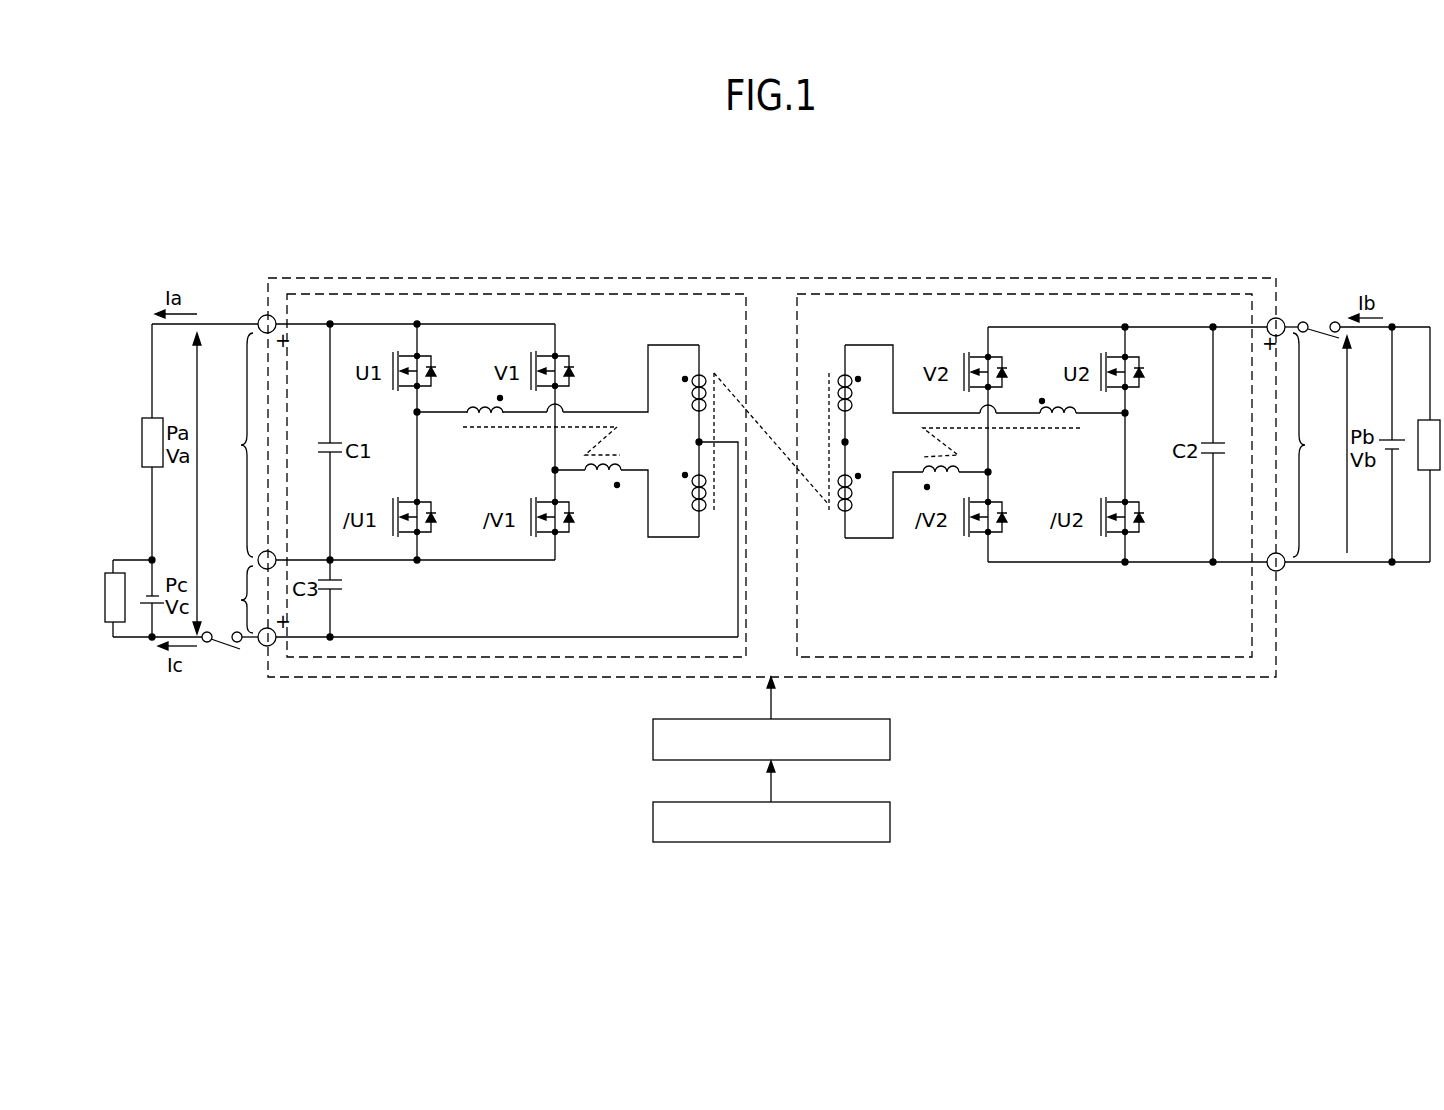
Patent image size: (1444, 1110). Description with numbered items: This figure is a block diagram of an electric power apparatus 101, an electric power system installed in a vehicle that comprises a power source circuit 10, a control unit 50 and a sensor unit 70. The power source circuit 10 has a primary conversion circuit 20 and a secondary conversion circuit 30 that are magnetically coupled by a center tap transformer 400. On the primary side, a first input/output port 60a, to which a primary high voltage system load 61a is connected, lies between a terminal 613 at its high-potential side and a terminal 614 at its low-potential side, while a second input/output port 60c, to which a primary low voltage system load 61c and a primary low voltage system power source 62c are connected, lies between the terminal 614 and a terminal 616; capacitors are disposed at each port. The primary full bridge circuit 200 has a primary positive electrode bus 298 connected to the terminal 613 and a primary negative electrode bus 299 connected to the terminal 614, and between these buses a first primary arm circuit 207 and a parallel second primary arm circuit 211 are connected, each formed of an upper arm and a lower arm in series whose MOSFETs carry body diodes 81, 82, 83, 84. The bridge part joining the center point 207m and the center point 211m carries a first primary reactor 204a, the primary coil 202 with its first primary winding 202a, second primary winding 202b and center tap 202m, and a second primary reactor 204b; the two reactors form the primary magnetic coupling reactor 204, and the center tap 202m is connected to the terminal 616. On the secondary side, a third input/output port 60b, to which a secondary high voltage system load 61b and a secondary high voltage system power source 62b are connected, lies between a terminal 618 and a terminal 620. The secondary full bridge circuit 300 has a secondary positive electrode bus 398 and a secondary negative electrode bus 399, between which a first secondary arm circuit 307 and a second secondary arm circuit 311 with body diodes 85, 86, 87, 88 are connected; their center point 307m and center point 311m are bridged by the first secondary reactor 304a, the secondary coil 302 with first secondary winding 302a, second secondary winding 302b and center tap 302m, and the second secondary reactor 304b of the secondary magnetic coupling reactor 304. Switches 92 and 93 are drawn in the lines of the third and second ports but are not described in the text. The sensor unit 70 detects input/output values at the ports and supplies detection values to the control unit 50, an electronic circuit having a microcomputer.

The electric power apparatus 101 is at (247, 215).
The power source circuit 10 is at (1158, 277).
The primary conversion circuit 20 is at (516, 435).
The secondary conversion circuit 30 is at (1024, 435).
The primary full bridge circuit 200 is at (600, 292).
The secondary full bridge circuit 300 is at (942, 292).
The primary coil 202 is at (678, 438).
The first primary winding 202a is at (690, 395).
The second primary winding 202b is at (690, 507).
The center tap 202m is at (696, 442).
The primary magnetic coupling reactor 204 is at (542, 460).
The first primary reactor 204a is at (470, 409).
The second primary reactor 204b is at (602, 480).
The first primary arm circuit 207 is at (438, 468).
The center point 207m is at (412, 412).
The second primary arm circuit 211 is at (572, 468).
The center point 211m is at (552, 473).
The primary positive electrode bus 298 is at (350, 324).
The primary negative electrode bus 299 is at (358, 564).
The diode of switch U1 81 is at (433, 370).
The diode of switch /U1 82 is at (433, 520).
The diode of switch V1 83 is at (571, 372).
The diode of switch /V1 84 is at (571, 522).
The secondary coil 302 is at (879, 420).
The first secondary winding 302a is at (850, 395).
The second secondary winding 302b is at (848, 510).
The center tap 302m is at (848, 442).
The secondary magnetic coupling reactor 304 is at (993, 464).
The first secondary reactor 304a is at (1050, 410).
The second secondary reactor 304b is at (935, 482).
The first secondary arm circuit 307 is at (1132, 470).
The center point 307m is at (1128, 414).
The second secondary arm circuit 311 is at (993, 462).
The center point 311m is at (991, 474).
The secondary positive electrode bus 398 is at (1155, 327).
The secondary negative electrode bus 399 is at (1185, 566).
The diode of switch V2 85 is at (1004, 372).
The diode of switch /V2 86 is at (1004, 524).
The diode of switch U2 87 is at (1141, 373).
The diode of switch /U2 88 is at (1141, 519).
The transformer 400 is at (772, 405).
The control unit 50 is at (892, 738).
The sensor unit 70 is at (892, 822).
The terminal 613 is at (262, 318).
The terminal 614 is at (275, 552).
The terminal 616 is at (262, 646).
The terminal 618 is at (1283, 319).
The terminal 620 is at (1283, 570).
The primary high voltage system load 61a is at (168, 418).
The secondary high voltage system load 61b is at (1442, 545).
The primary low voltage system load 61c is at (106, 625).
The secondary high voltage system power source 62b is at (1388, 455).
The primary low voltage system power source 62c is at (150, 568).
The first input/output port 60a is at (223, 446).
The third input/output port 60b is at (1322, 445).
The second input/output port 60c is at (223, 597).
The switch 92 is at (1318, 336).
The switch 93 is at (225, 647).